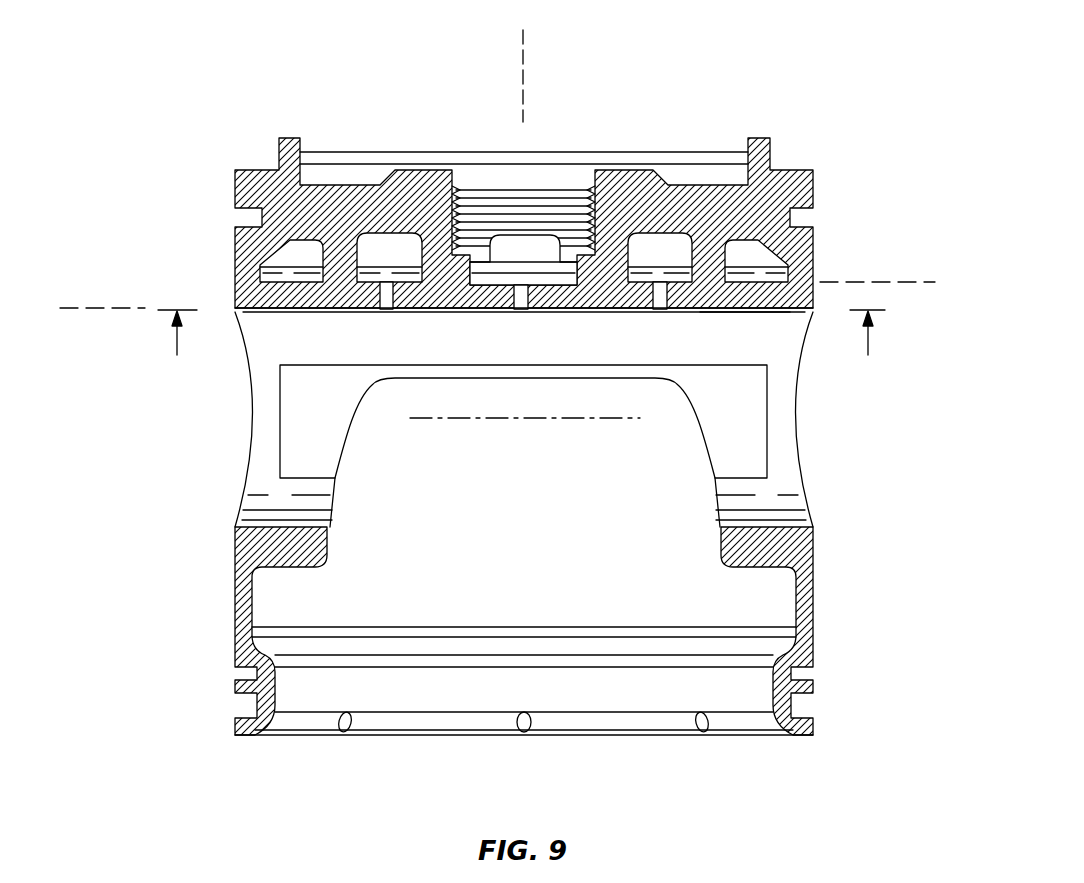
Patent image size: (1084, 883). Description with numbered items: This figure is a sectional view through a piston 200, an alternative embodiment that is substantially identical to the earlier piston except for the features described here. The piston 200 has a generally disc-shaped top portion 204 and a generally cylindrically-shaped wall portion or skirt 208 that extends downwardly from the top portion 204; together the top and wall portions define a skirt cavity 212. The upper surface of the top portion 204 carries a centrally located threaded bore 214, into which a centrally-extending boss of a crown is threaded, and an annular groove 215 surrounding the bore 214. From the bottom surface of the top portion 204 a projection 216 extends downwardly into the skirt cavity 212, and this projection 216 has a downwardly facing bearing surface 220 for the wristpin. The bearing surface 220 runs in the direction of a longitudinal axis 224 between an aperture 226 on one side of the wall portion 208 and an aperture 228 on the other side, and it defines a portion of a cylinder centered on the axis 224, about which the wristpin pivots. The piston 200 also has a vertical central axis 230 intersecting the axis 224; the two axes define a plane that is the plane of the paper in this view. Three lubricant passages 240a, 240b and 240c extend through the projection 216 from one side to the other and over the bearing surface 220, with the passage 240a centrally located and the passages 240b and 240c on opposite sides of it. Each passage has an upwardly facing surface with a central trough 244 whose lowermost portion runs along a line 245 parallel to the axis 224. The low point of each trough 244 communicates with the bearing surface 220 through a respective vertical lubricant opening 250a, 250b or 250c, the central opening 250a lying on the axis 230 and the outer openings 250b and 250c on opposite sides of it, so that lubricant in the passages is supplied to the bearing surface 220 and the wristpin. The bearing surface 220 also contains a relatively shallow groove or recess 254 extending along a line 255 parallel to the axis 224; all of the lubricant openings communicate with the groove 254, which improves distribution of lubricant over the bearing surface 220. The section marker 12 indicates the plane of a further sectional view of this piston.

The piston 200 is at (836, 132).
The top portion 204 is at (803, 195).
The wall portion or skirt 208 is at (800, 600).
The skirt cavity 212 is at (548, 548).
The threaded bore 214 is at (478, 185).
The annular groove 215 is at (302, 178).
The projection 216 is at (420, 313).
The bearing surface 220 is at (255, 315).
The longitudinal axis 224 is at (432, 420).
The aperture 226 is at (240, 520).
The aperture 228 is at (795, 525).
The vertical central axis 230 is at (523, 62).
The lubricant passage 240a is at (527, 250).
The lubricant passage 240b is at (385, 248).
The lubricant passage 240c is at (663, 248).
The central trough 244 is at (265, 252).
The line 245 is at (838, 282).
The lubricant opening 250a is at (519, 300).
The lubricant opening 250b is at (383, 298).
The lubricant opening 250c is at (662, 300).
The groove or recess 254 is at (707, 310).
The line 255 is at (65, 300).
The section line 12 is at (521, 347).